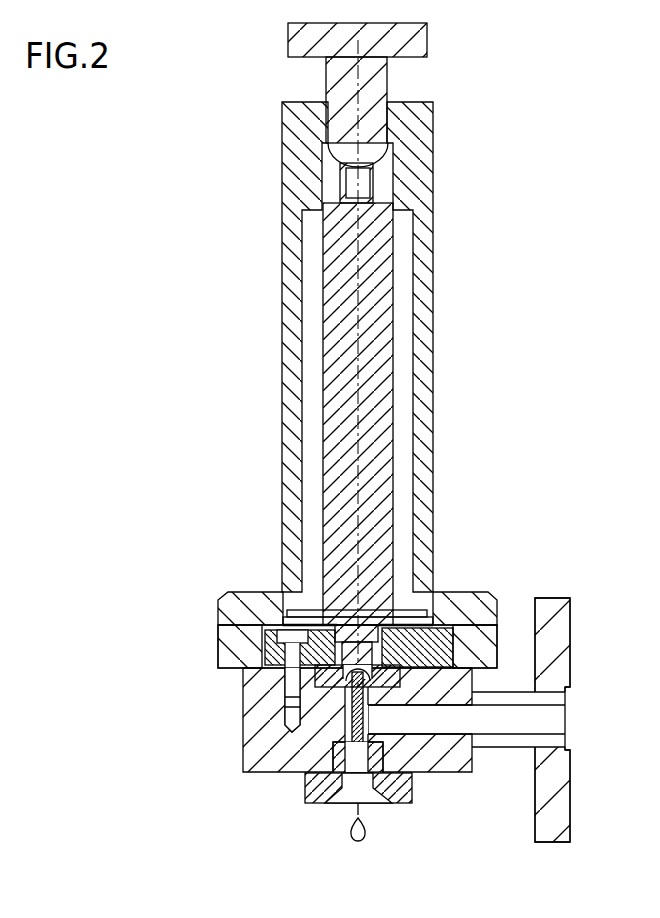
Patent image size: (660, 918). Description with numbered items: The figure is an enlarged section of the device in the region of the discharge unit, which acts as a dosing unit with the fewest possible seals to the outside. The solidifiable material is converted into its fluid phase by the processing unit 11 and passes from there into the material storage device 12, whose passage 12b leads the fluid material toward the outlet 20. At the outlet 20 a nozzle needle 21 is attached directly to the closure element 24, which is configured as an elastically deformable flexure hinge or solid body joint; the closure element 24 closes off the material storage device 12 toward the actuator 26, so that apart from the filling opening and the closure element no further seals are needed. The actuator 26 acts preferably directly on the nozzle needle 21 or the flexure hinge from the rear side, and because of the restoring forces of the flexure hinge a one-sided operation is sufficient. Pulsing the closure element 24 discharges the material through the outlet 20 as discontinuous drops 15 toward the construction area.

The actuator 26 is at (373, 462).
The closure element 24 is at (347, 672).
The nozzle needle 21 is at (352, 730).
The outlet 20 is at (370, 797).
The drops 15 is at (352, 838).
The processing unit 11 is at (560, 615).
The material storage device 12 is at (582, 722).
The supply passage 12b is at (462, 720).